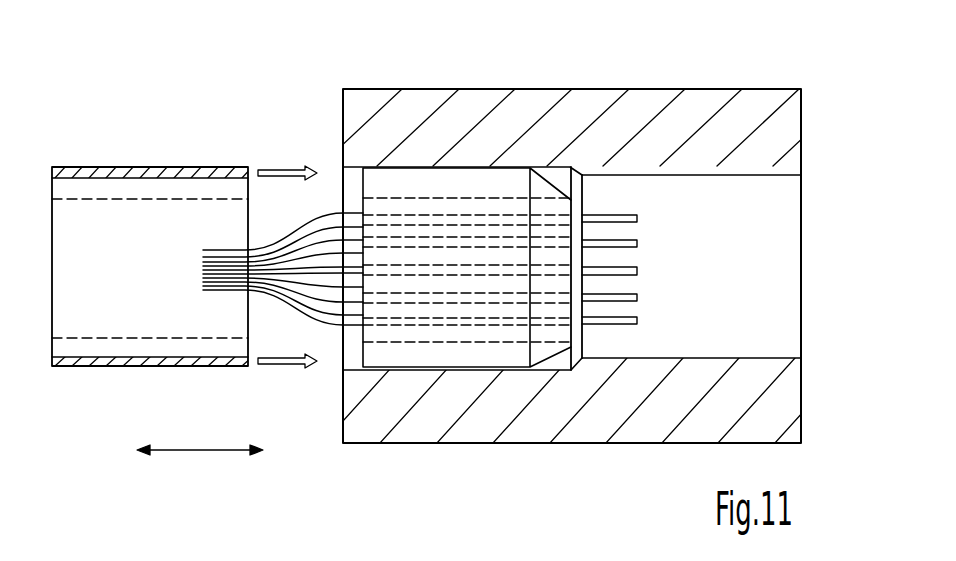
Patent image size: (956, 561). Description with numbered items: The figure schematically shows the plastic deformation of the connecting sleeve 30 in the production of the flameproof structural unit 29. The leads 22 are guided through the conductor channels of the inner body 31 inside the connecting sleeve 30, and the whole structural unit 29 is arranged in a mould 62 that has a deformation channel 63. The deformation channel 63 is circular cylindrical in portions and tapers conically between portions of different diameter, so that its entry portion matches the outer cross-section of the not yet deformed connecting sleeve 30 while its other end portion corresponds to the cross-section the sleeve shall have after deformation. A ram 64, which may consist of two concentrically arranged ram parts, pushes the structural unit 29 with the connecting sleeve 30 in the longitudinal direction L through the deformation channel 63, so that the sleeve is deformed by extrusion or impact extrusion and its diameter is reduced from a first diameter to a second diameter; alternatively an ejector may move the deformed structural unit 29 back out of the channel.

The leads 22 is at (638, 245).
The flameproof structural unit 29 is at (411, 376).
The connecting sleeve 30 is at (405, 184).
The inner body 31 is at (458, 198).
The mould 62 is at (538, 420).
The deformation channel 63 is at (785, 260).
The ram 64 is at (131, 155).
The longitudinal direction L is at (192, 450).